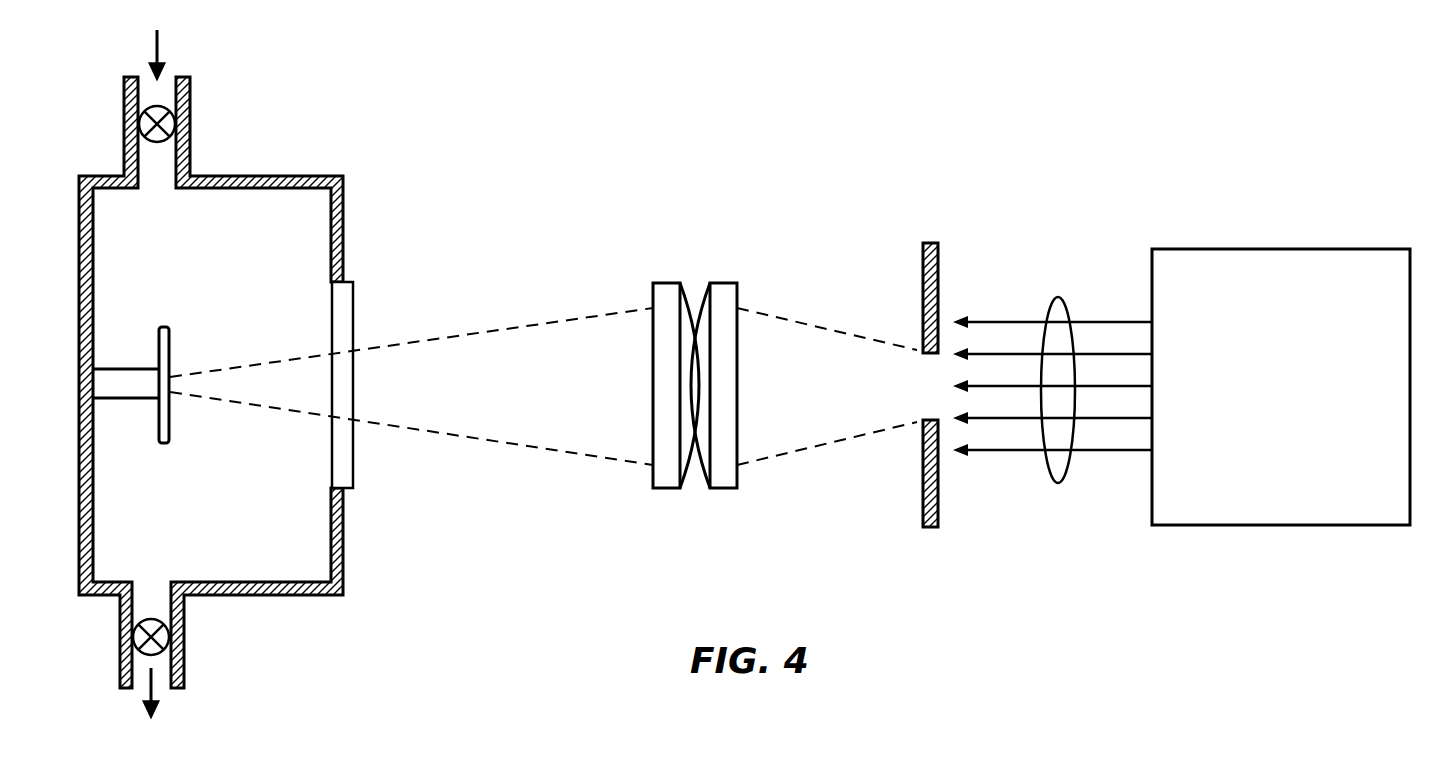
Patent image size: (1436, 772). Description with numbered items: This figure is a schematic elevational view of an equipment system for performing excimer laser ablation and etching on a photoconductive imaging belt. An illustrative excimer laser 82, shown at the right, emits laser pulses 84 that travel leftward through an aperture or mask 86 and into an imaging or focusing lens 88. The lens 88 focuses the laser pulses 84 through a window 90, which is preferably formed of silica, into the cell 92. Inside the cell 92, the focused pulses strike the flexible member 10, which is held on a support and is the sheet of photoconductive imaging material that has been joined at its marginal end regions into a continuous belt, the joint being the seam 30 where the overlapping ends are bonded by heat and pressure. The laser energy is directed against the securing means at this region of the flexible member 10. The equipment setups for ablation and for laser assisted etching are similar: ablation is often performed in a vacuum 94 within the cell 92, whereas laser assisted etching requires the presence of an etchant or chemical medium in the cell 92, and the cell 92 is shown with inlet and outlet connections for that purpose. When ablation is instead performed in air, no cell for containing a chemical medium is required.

The flexible member 10 is at (180, 345).
The seam 30 is at (170, 383).
The excimer laser 82 is at (1235, 513).
The laser pulses 84 is at (1058, 483).
The aperture or mask 86 is at (939, 265).
The imaging or focusing lens 88 is at (725, 297).
The window 90 is at (353, 392).
The cell 92 is at (278, 597).
The vacuum 94 is at (230, 522).